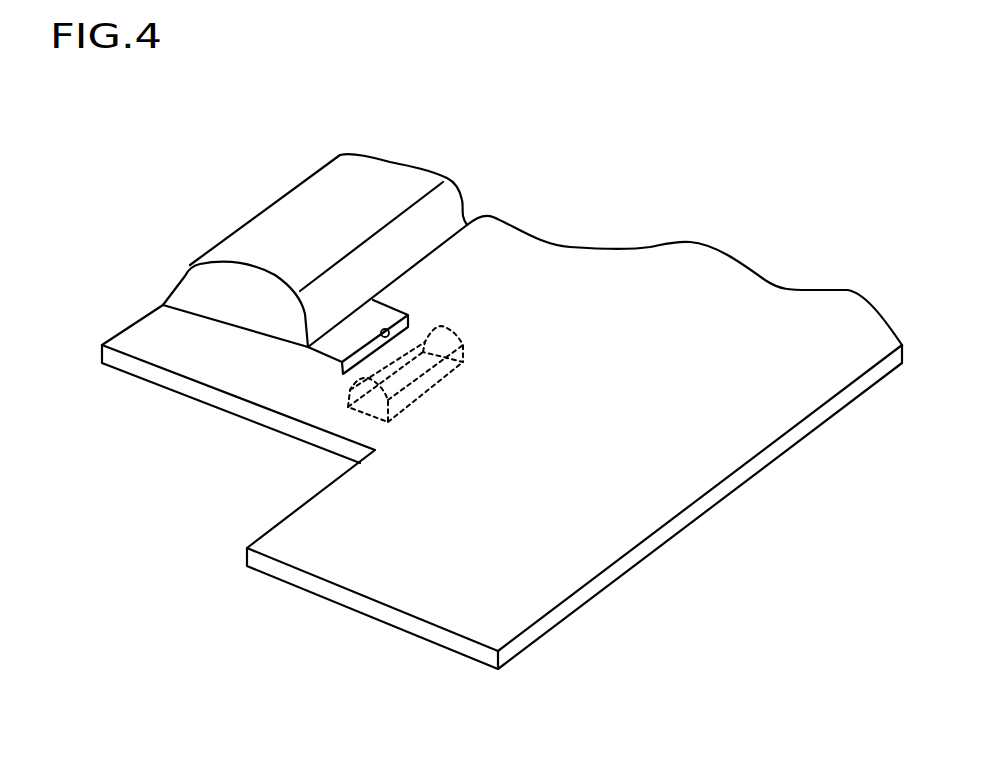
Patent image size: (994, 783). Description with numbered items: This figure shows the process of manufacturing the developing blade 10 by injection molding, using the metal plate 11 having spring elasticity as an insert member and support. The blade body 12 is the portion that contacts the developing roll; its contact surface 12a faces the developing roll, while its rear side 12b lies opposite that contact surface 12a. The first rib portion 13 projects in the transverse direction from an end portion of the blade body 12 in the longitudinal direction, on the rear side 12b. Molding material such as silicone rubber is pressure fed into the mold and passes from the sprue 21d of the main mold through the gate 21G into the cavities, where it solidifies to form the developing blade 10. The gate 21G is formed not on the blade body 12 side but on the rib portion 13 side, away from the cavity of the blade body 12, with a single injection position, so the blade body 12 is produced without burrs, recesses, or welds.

The developing blade 10 is at (502, 362).
The metal plate 11 is at (707, 282).
The blade body 12 is at (285, 275).
The contact surface 12a is at (187, 272).
The rear side 12b is at (327, 315).
The first rib portion 13 is at (365, 323).
The gate 21G is at (402, 337).
The sprue 21d is at (462, 338).